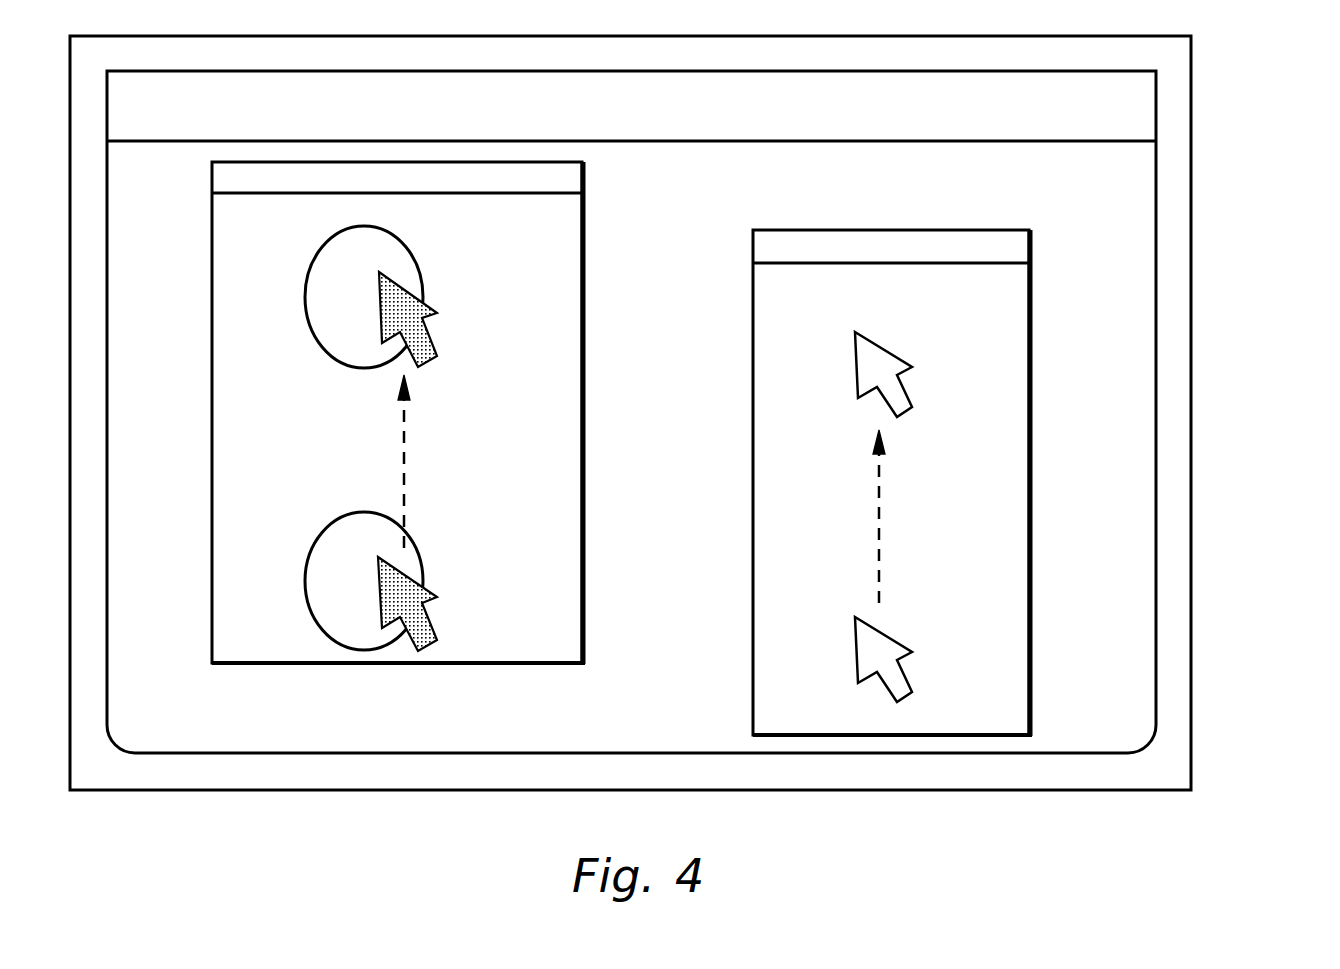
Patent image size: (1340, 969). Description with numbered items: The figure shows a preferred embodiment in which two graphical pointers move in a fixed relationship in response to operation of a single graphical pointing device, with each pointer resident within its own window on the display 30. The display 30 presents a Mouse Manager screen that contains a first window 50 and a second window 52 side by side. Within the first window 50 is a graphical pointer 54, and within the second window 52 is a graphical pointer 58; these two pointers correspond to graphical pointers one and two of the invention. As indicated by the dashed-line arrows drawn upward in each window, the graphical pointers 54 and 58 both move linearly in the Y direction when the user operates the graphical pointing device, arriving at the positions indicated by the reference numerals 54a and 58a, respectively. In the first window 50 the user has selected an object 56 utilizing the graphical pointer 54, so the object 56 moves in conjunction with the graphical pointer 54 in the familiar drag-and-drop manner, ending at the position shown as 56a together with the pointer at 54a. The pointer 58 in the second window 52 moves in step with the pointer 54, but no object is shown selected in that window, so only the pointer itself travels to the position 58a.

The display 30 is at (1252, 321).
The window 50 is at (583, 318).
The window 52 is at (1030, 385).
The graphical pointer 54 is at (437, 623).
The graphical pointer position 54a is at (433, 342).
The object 56 is at (312, 554).
The object position 56a is at (310, 269).
The graphical pointer 58 is at (907, 680).
The graphical pointer position 58a is at (907, 360).